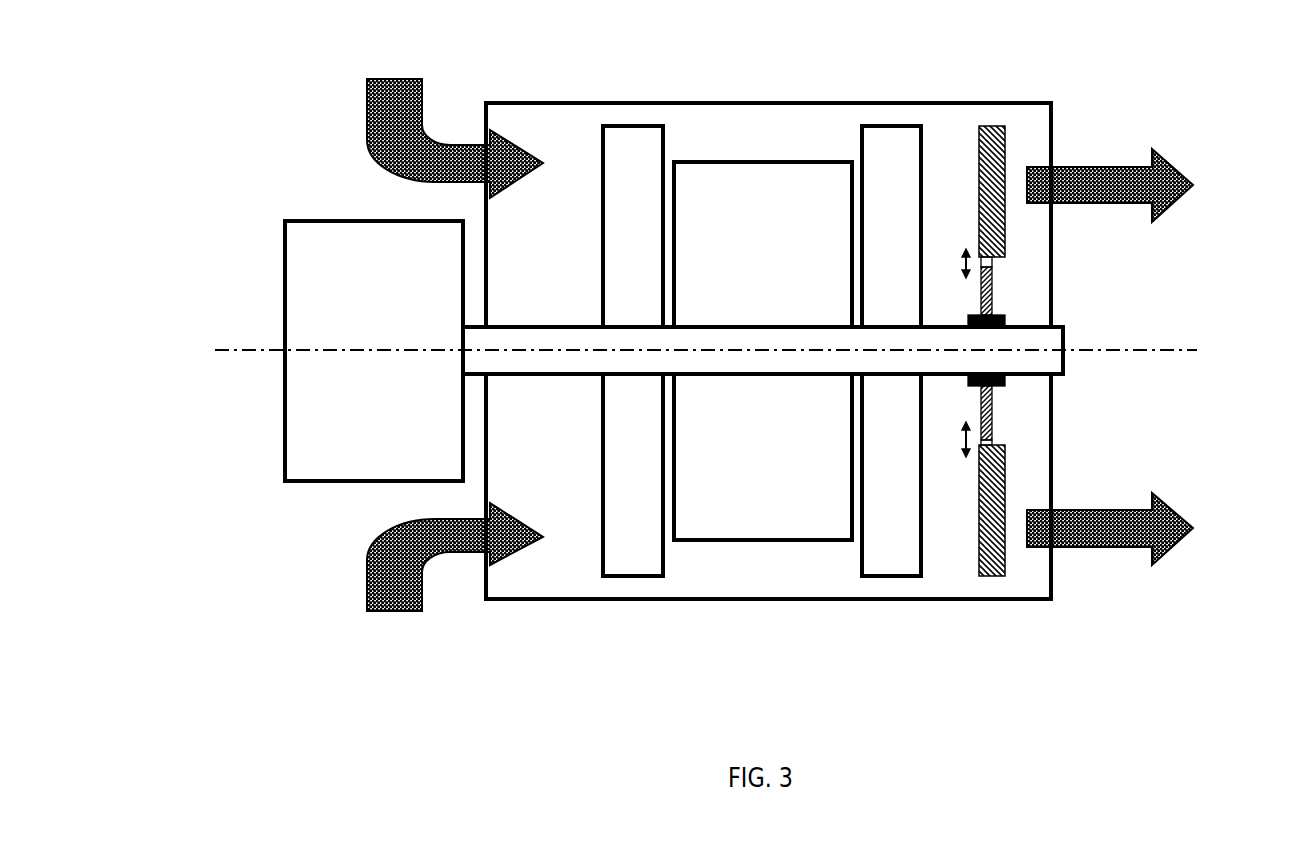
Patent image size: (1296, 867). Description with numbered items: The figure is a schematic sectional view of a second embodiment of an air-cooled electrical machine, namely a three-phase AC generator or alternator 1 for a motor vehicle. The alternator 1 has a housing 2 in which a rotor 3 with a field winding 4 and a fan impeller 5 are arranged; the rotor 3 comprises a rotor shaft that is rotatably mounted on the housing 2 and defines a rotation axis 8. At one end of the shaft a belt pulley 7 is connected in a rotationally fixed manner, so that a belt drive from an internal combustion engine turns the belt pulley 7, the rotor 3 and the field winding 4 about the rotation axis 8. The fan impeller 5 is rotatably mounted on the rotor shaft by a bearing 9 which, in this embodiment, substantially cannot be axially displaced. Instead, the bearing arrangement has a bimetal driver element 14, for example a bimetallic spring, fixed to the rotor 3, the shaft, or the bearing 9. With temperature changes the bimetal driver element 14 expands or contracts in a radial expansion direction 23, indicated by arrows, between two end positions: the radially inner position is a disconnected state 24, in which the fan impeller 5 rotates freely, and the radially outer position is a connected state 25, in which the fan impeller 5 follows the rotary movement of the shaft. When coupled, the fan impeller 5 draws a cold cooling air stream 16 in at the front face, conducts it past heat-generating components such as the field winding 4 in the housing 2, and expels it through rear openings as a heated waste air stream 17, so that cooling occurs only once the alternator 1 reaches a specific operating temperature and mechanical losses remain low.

The alternator 1 is at (216, 618).
The housing 2 is at (987, 101).
The rotor 3 is at (638, 148).
The field winding 4 is at (750, 187).
The fan impeller 5 is at (1005, 572).
The belt pulley 7 is at (303, 262).
The rotation axis 8 is at (1172, 348).
The bearing 9 is at (1005, 317).
The bimetal driver element 14 is at (993, 280).
The cooling air stream 16 is at (396, 110).
The waste air stream 17 is at (1158, 182).
The expansion direction 23 is at (961, 246).
The disconnected state 24 is at (966, 422).
The connected state 25 is at (966, 457).